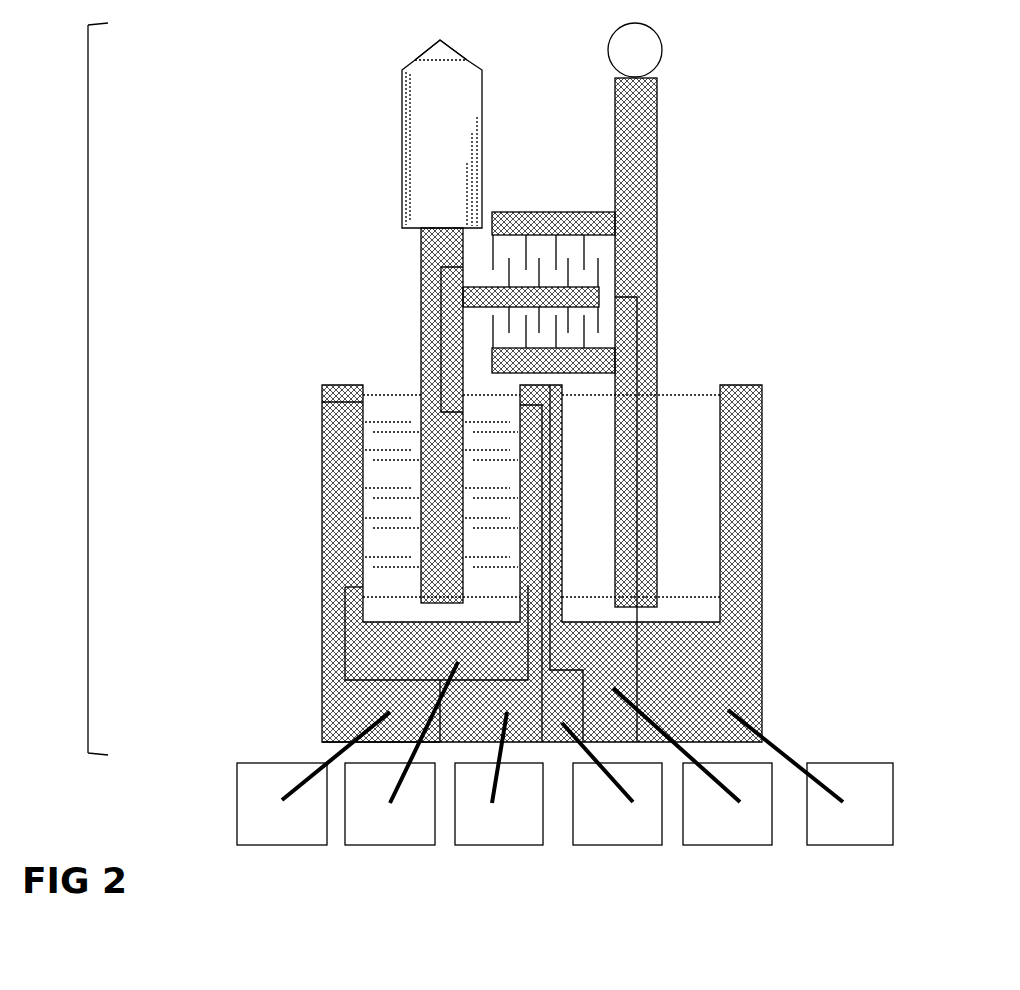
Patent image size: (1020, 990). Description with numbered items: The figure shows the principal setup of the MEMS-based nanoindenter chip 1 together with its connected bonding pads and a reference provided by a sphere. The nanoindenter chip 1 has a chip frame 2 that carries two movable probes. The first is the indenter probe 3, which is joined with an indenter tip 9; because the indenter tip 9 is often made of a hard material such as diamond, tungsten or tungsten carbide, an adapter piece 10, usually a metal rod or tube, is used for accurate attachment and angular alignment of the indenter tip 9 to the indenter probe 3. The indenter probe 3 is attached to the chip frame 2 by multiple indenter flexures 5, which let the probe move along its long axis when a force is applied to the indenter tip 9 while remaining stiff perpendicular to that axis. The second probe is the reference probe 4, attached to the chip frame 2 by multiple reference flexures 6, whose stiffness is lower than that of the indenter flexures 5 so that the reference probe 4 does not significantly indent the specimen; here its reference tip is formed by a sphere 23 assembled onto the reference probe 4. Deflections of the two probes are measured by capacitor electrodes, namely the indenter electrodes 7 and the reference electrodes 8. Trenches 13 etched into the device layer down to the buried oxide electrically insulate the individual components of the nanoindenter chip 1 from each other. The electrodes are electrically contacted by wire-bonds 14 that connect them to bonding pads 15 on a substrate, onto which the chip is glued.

The nanoindenter chip 1 is at (88, 393).
The chip frame 2 is at (745, 665).
The indenter probe 3 is at (435, 353).
The reference probe 4 is at (640, 165).
The indenter flexures 5 is at (497, 393).
The reference flexures 6 is at (668, 393).
The indenter electrodes 7 is at (485, 518).
The reference electrodes 8 is at (582, 253).
The indenter tip 9 is at (430, 52).
The adapter piece 10 is at (427, 115).
The trench 13 is at (345, 655).
The wire-bond 14 is at (325, 745).
The bonding pad 15 is at (820, 768).
The sphere 23 is at (636, 52).